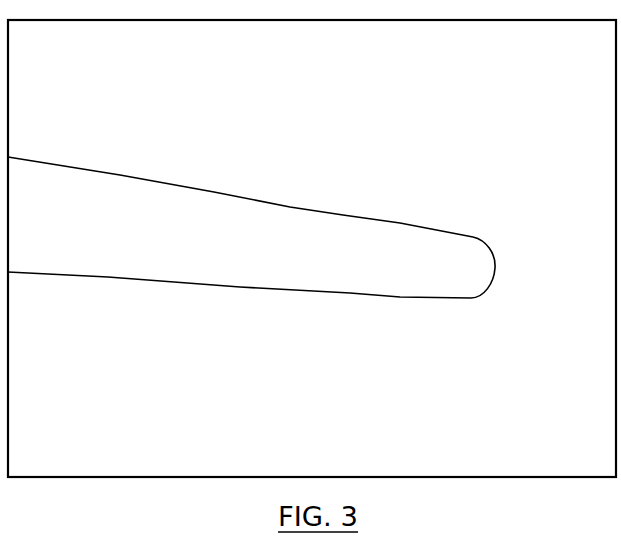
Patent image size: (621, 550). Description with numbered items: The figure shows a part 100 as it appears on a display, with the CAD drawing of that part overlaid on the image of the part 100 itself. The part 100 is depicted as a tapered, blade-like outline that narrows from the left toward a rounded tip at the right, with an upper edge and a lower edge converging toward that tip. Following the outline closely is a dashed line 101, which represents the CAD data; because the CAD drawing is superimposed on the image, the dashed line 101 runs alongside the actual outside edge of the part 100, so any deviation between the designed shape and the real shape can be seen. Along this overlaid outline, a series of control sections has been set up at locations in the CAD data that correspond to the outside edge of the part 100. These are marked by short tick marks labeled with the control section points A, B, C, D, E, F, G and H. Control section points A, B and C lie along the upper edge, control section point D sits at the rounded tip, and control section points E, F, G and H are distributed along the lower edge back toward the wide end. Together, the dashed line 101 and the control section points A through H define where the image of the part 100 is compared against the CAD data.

The part 100 is at (55, 257).
The dashed line 101 is at (137, 179).
The control section point A is at (213, 198).
The control section point B is at (342, 221).
The control section point C is at (470, 243).
The control section point D is at (489, 269).
The control section point E is at (470, 292).
The control section point F is at (350, 287).
The control section point G is at (240, 281).
The control section point H is at (108, 271).